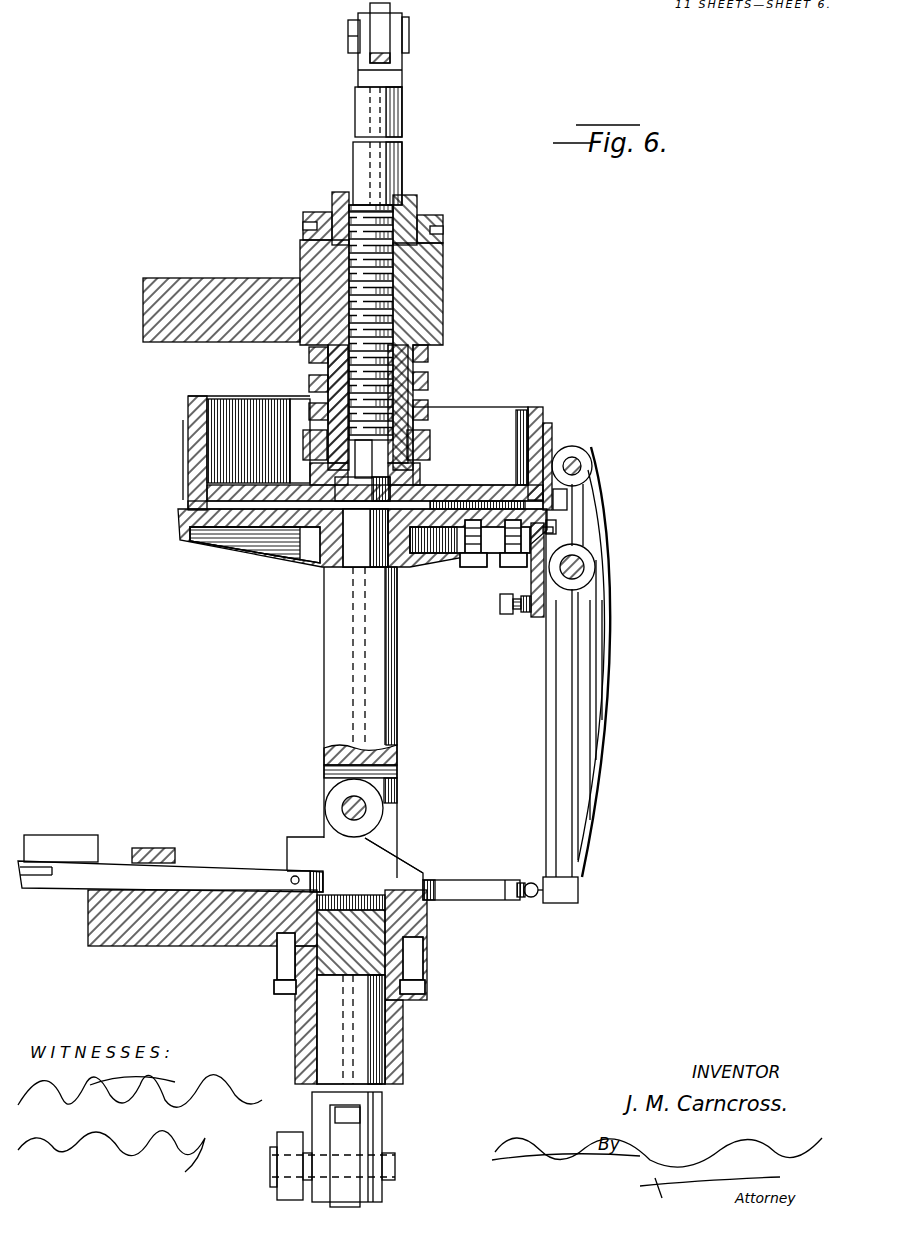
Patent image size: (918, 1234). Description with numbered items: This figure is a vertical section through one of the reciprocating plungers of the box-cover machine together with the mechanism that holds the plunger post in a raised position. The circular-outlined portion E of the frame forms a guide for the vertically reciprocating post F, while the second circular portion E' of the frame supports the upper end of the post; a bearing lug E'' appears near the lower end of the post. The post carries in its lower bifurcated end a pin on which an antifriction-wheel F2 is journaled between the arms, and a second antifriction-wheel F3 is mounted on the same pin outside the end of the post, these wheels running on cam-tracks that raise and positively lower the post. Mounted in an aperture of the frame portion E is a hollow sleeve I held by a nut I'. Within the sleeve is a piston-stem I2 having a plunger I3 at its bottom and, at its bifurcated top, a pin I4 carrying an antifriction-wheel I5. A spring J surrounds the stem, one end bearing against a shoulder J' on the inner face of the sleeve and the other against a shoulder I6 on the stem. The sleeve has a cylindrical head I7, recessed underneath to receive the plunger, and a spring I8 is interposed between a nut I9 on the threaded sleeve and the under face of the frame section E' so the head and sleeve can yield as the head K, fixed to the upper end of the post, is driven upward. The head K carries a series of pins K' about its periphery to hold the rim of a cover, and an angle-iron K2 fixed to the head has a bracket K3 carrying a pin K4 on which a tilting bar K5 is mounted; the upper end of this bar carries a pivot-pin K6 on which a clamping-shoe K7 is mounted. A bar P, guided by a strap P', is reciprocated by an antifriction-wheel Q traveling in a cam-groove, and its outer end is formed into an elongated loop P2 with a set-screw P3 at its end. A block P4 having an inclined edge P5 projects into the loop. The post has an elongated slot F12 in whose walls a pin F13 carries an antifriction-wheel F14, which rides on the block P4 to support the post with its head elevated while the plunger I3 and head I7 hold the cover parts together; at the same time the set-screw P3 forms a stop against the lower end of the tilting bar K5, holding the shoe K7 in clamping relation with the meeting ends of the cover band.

The sleeve I is at (391, 291).
The nut I' is at (386, 218).
The piston-stem I2 is at (383, 108).
The plunger I3 is at (467, 491).
The pin I4 is at (410, 31).
The antifriction-wheel I5 is at (386, 13).
The shoulder I6 is at (362, 205).
The cylindrical head I7 is at (205, 402).
The spring I8 is at (308, 376).
The nut I9 is at (312, 432).
The spring J is at (386, 355).
The shoulder J' is at (389, 415).
The head K is at (362, 551).
The pins K' is at (330, 453).
The angle-iron K2 is at (530, 574).
The bracket K3 is at (564, 528).
The pin K4 is at (584, 567).
The tilting bar K5 is at (603, 631).
The pivot-pin K6 is at (576, 463).
The clamping-shoe K7 is at (553, 433).
The circular-outlined portion of the frame E is at (257, 987).
The second circular portion of the frame E' is at (221, 292).
The bearing lug E'' is at (409, 1166).
The reciprocating post F is at (364, 673).
The antifriction-wheel F2 is at (347, 1195).
The antifriction-wheel F3 is at (288, 1192).
The elongated slot F12 is at (383, 780).
The pin F13 is at (364, 807).
The antifriction-wheel F14 is at (338, 790).
The bar P is at (170, 847).
The strap P' is at (146, 836).
The elongated loop P2 is at (467, 893).
The set-screw P3 is at (537, 897).
The block P4 is at (338, 848).
The inclined edge P5 is at (398, 860).
The antifriction-wheel Q is at (58, 846).